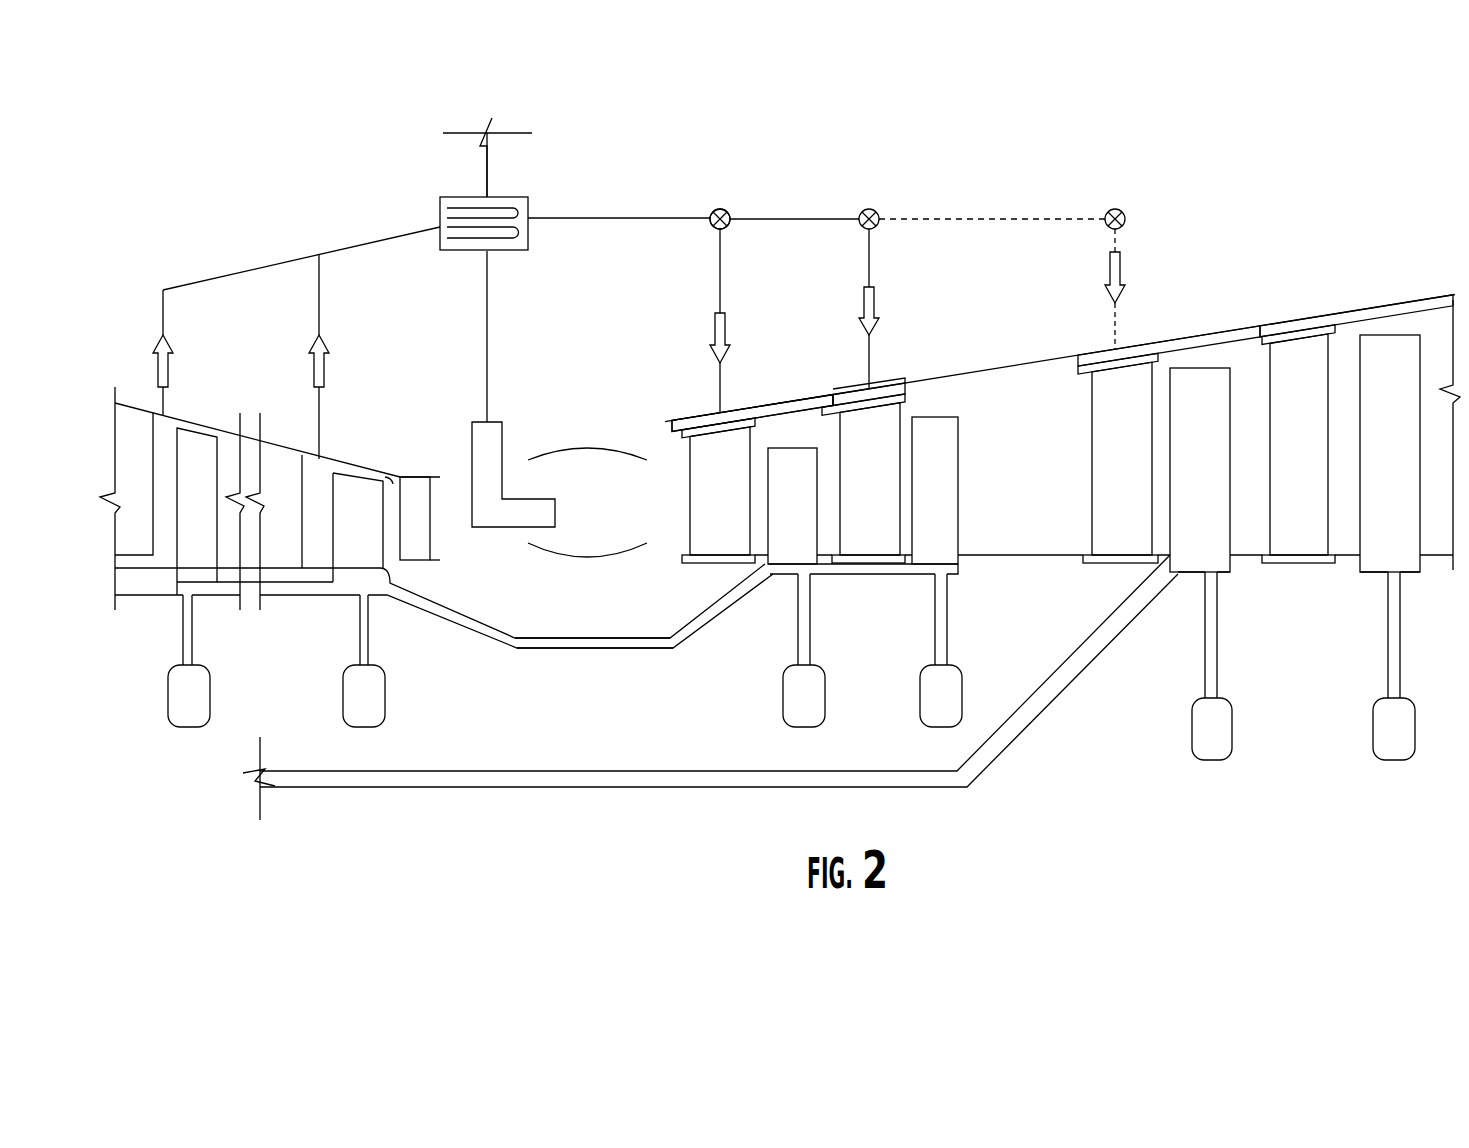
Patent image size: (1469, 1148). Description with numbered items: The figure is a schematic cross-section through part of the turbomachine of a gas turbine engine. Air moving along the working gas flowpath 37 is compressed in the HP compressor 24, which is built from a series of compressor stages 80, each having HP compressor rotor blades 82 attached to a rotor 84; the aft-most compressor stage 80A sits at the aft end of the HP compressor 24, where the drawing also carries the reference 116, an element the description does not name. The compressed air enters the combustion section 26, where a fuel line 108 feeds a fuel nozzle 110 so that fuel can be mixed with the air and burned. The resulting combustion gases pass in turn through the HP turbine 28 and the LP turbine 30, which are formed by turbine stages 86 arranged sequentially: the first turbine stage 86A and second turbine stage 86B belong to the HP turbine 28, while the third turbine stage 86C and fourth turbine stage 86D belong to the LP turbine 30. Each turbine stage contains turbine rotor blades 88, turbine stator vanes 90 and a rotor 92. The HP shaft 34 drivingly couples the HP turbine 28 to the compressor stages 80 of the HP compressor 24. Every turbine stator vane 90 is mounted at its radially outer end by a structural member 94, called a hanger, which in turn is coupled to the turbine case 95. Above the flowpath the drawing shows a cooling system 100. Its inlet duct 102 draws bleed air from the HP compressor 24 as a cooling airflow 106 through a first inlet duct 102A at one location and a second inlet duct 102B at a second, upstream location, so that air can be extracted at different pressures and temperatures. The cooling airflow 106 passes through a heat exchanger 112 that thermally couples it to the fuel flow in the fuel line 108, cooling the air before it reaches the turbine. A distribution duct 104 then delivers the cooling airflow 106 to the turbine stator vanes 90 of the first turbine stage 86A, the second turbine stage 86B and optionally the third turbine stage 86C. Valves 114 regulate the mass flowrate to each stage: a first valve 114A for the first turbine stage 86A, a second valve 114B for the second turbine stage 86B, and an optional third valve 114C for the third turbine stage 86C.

The HP compressor 24 is at (280, 400).
The combustion section 26 is at (603, 370).
The HP turbine 28 is at (812, 272).
The LP turbine 30 is at (1293, 245).
The HP shaft 34 is at (607, 649).
The working gas flowpath 37 is at (327, 525).
The compressor stages 80 is at (352, 462).
The aft-most compressor stage 80A is at (353, 462).
The HP compressor rotor blades 82 is at (208, 518).
The rotor 84 is at (357, 630).
The turbine stages 86 is at (793, 407).
The first turbine stage 86A is at (792, 407).
The second turbine stage 86B is at (943, 313).
The third turbine stage 86C is at (1195, 330).
The fourth turbine stage 86D is at (1382, 290).
The turbine rotor blades 88 is at (807, 509).
The turbine stator vanes 90 is at (730, 509).
The rotor 92 is at (805, 635).
The structural member 94 is at (698, 428).
The turbine case 95 is at (808, 398).
The cooling system 100 is at (637, 182).
The inlet duct 102 is at (351, 238).
The first inlet duct 102A is at (322, 295).
The second inlet duct 102B is at (162, 303).
The distribution duct 104 is at (691, 218).
The cooling airflow 106 is at (167, 373).
The fuel line 108 is at (487, 322).
The fuel nozzle 110 is at (513, 527).
The heat exchanger 112 is at (506, 197).
The valves 114 is at (724, 208).
The first valve 114A is at (725, 209).
The second valve 114B is at (873, 208).
The third valve 114C is at (1119, 208).
The compressor discharge 116 is at (393, 480).